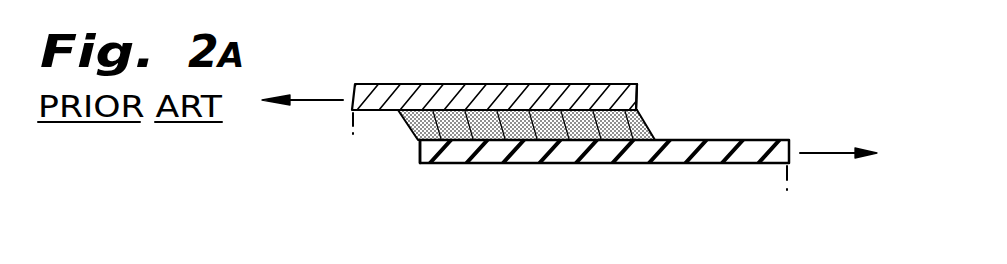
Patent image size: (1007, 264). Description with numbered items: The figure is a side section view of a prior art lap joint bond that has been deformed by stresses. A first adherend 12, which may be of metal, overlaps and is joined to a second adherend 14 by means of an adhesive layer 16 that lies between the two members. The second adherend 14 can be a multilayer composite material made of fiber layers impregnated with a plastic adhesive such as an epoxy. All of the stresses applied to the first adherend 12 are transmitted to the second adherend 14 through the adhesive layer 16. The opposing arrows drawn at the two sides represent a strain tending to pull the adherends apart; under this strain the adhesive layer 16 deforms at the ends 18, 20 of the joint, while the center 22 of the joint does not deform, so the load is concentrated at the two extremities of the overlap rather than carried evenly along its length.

The first adherend 12 is at (388, 92).
The second adherend 14 is at (714, 149).
The adhesive layer 16 is at (410, 127).
The end of the joint 18 is at (418, 158).
The end of the joint 20 is at (638, 97).
The center of the joint 22 is at (548, 110).